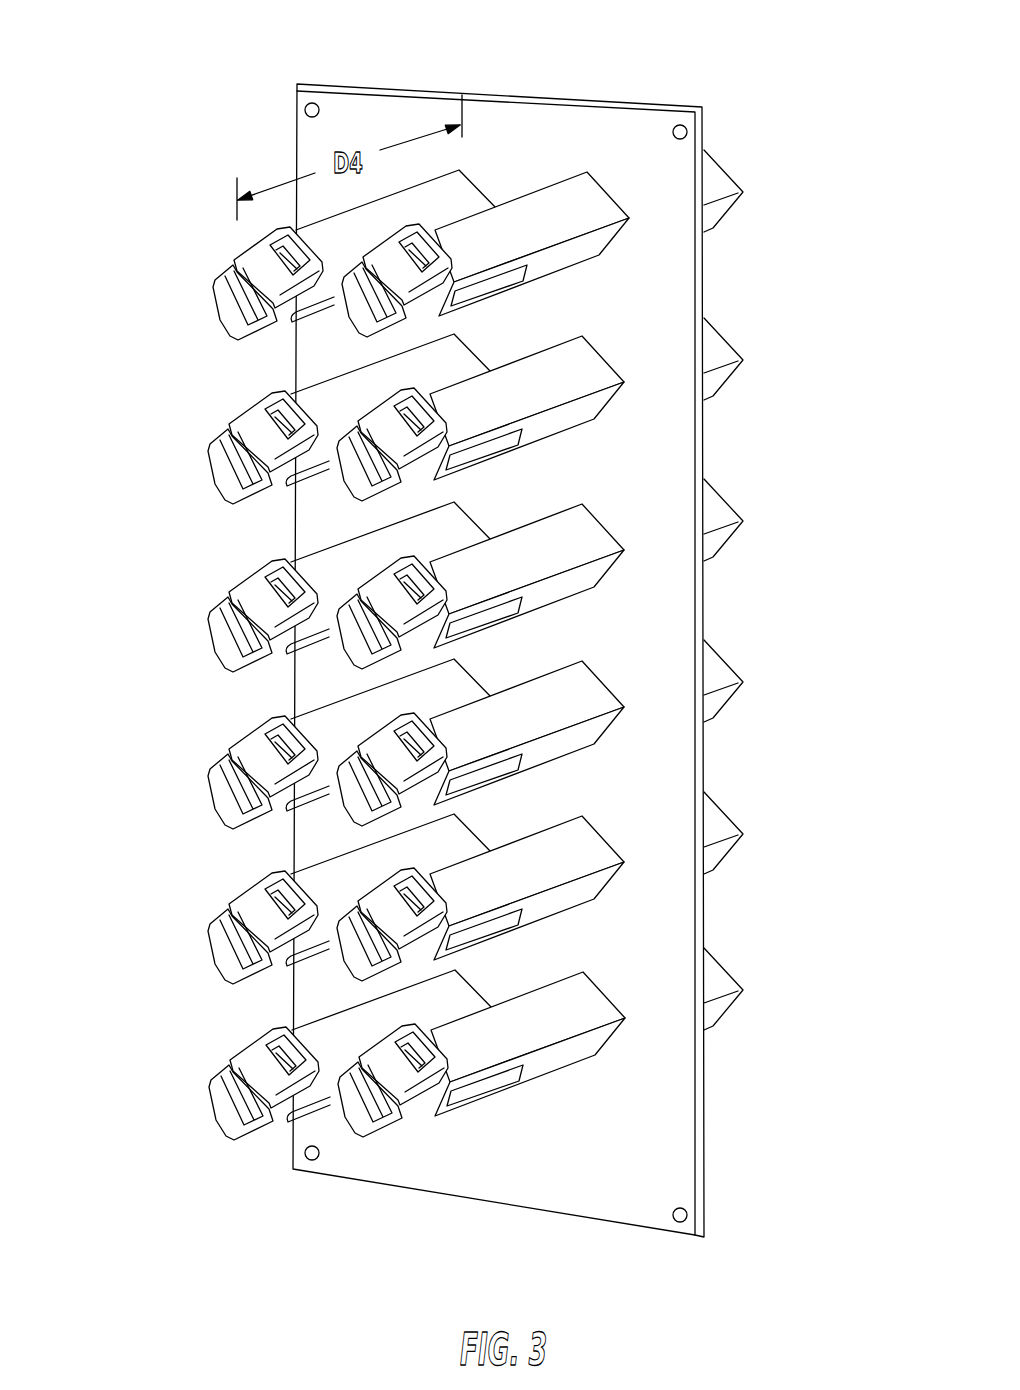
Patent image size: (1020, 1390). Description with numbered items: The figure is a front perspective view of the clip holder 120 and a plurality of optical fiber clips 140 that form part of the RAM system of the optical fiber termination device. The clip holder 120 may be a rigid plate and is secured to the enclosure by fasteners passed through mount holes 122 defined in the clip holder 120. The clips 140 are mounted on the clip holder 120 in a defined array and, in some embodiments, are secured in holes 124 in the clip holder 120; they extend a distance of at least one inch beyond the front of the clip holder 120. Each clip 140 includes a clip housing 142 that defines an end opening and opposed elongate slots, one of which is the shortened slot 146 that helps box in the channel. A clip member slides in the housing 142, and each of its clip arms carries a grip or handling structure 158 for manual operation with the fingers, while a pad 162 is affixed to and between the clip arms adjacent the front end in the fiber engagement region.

The clip holder 120 is at (679, 124).
The mount holes 122 is at (305, 108).
The holes 124 is at (609, 196).
The optical fiber clips 140 is at (441, 627).
The clip housing 142 is at (450, 1007).
The elongate slot 146 is at (327, 1117).
The handling structure 158 is at (190, 1137).
The pad 162 is at (233, 1112).